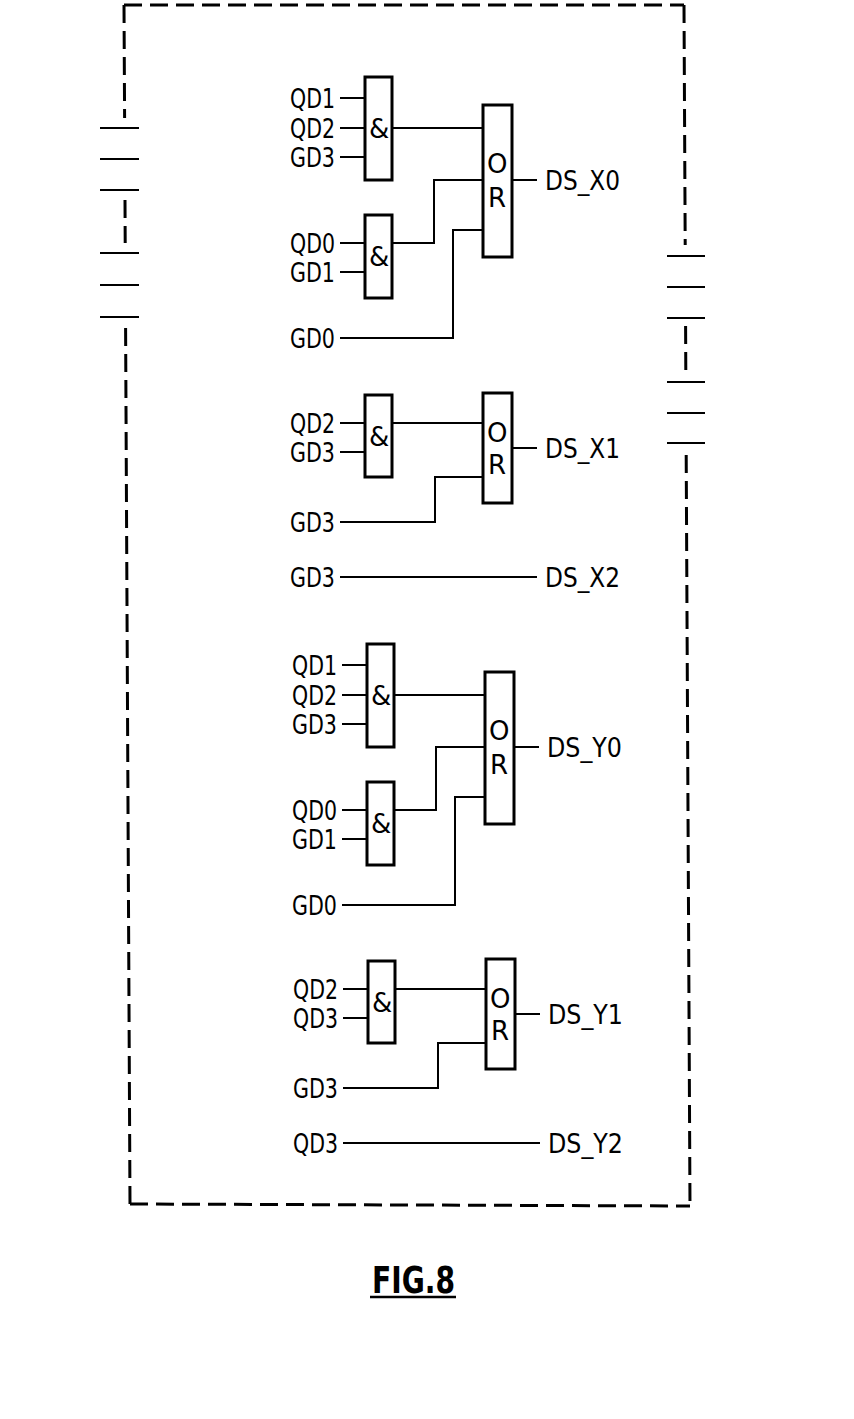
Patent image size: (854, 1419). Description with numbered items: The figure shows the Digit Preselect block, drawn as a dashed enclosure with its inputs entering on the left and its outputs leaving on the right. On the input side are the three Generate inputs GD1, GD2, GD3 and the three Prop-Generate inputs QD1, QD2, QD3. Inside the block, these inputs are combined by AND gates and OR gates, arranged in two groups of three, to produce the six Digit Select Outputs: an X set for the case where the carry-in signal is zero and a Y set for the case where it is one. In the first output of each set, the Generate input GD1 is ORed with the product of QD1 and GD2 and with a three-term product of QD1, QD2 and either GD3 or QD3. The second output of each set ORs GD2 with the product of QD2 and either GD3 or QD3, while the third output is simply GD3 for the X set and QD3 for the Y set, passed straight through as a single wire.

The Generate input GD1 is at (96, 128).
The Generate input GD2 is at (96, 159).
The Generate input GD3 is at (96, 190).
The Prop-Generate input QD1 is at (96, 253).
The Prop-Generate input QD2 is at (96, 285).
The Prop-Generate input QD3 is at (96, 317).